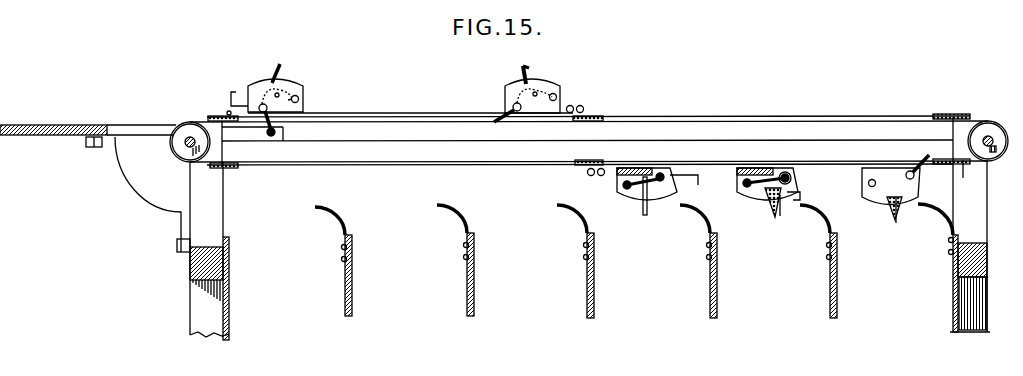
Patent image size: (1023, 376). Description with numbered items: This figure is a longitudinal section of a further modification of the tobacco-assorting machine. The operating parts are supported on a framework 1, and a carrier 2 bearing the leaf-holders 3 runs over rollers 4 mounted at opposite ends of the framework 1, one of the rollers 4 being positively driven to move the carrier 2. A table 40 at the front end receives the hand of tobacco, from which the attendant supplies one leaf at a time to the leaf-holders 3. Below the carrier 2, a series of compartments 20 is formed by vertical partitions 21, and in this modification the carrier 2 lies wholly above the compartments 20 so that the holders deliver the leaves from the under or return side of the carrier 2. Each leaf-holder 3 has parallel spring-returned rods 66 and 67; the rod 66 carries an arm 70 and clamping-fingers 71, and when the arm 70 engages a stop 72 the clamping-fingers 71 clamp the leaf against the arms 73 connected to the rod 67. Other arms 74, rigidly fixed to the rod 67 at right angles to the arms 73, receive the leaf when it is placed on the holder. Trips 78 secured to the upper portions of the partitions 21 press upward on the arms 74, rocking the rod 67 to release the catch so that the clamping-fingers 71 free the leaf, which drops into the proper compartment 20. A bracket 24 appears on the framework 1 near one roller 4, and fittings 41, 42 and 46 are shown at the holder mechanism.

The framework 1 is at (561, 228).
The carrier 2 is at (713, 113).
The leaf-holders 3 is at (860, 185).
The rollers 4 is at (188, 138).
The compartments 20 is at (574, 297).
The vertical partitions 21 is at (352, 270).
The bracket 24 is at (969, 181).
The table 40 is at (88, 126).
The hook bracket 41 is at (229, 97).
The rod 42 is at (650, 197).
The stud 46 is at (267, 135).
The rod 66 is at (661, 172).
The rod 67 is at (619, 187).
The arm 70 is at (497, 125).
The clamping-fingers 71 is at (780, 217).
The stop 72 is at (272, 136).
The arms 73 is at (280, 64).
The arms 74 is at (800, 195).
The trips 78 is at (328, 216).